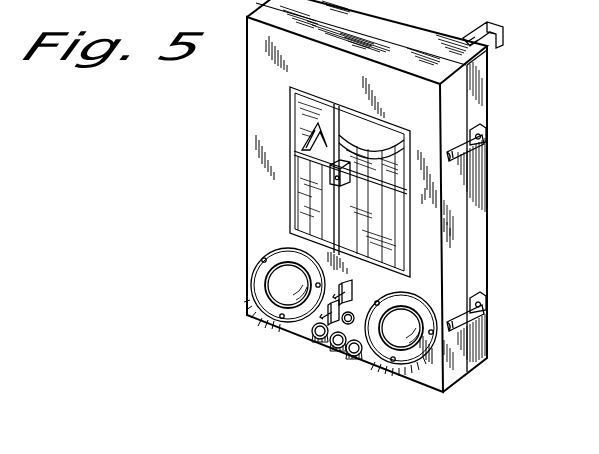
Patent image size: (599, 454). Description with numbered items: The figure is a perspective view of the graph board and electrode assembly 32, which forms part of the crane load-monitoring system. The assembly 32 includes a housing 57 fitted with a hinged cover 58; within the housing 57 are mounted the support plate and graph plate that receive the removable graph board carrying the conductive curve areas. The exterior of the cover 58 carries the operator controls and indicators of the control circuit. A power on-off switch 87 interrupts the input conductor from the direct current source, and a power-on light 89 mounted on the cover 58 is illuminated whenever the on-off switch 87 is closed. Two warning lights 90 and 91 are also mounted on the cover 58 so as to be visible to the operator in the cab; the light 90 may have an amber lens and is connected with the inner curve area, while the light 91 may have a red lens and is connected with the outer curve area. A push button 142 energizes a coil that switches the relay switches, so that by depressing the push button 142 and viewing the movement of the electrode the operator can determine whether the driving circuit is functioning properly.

The assembly 32 is at (504, 200).
The hinged cover 58 is at (255, 80).
The housing 57 is at (482, 103).
The light 90 is at (272, 283).
The light 91 is at (403, 340).
The push button 142 is at (352, 287).
The on-off switch 87 is at (293, 332).
The power-on light 89 is at (345, 338).